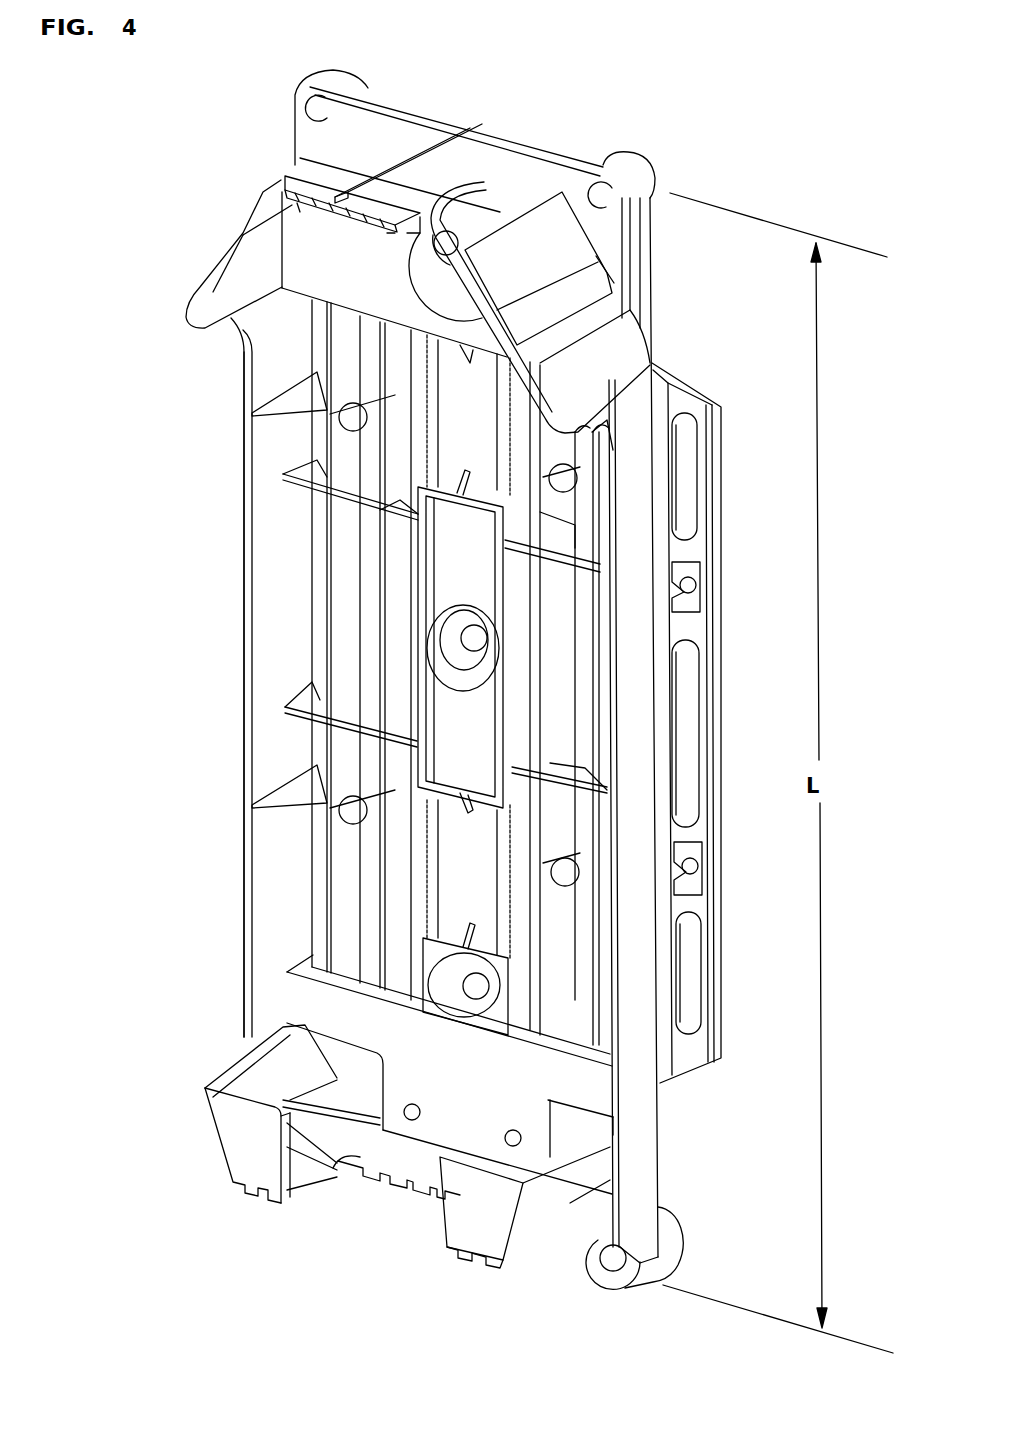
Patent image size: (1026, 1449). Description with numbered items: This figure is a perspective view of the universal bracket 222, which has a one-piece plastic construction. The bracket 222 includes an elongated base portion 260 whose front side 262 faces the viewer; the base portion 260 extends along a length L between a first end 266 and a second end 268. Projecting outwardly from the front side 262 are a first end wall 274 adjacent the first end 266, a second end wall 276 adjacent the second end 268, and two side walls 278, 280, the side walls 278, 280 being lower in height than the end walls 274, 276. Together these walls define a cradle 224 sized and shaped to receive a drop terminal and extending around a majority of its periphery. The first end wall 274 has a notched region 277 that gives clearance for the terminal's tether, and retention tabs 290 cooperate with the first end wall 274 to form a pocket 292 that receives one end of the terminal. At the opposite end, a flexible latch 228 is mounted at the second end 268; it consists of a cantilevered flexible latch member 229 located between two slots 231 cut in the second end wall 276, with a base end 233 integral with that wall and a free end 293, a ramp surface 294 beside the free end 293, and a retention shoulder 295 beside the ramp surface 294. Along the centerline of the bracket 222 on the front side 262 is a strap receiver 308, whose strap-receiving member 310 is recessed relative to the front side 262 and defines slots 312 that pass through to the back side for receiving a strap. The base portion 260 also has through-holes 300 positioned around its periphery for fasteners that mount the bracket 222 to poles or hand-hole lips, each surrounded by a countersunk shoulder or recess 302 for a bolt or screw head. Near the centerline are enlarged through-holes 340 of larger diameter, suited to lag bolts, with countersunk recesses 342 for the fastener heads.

The universal bracket 222 is at (667, 297).
The cradle 224 is at (243, 445).
The flexible latch 228 is at (355, 160).
The flexible latch member 229 is at (297, 178).
The slots 231 is at (323, 160).
The base end 233 is at (437, 172).
The base portion 260 is at (318, 680).
The front side 262 is at (460, 1062).
The first end 266 is at (419, 1152).
The second end 268 is at (466, 248).
The first end wall 274 is at (420, 1178).
The second end wall 276 is at (413, 128).
The notched region 277 is at (390, 1163).
The side wall 278 is at (247, 740).
The side wall 280 is at (640, 773).
The retention tabs 290 is at (245, 1148).
The pocket 292 is at (479, 1137).
The free end 293 is at (306, 207).
The ramp surface 294 is at (390, 232).
The retention shoulder 295 is at (432, 240).
The through-holes 300 is at (580, 655).
The countersunk shoulders or recesses 302 is at (583, 697).
The strap receiver 308 is at (413, 930).
The strap-receiving member 310 is at (460, 862).
The slots 312 is at (437, 830).
The enlarged through-holes 340 is at (458, 638).
The countersunk recesses 342 is at (460, 658).